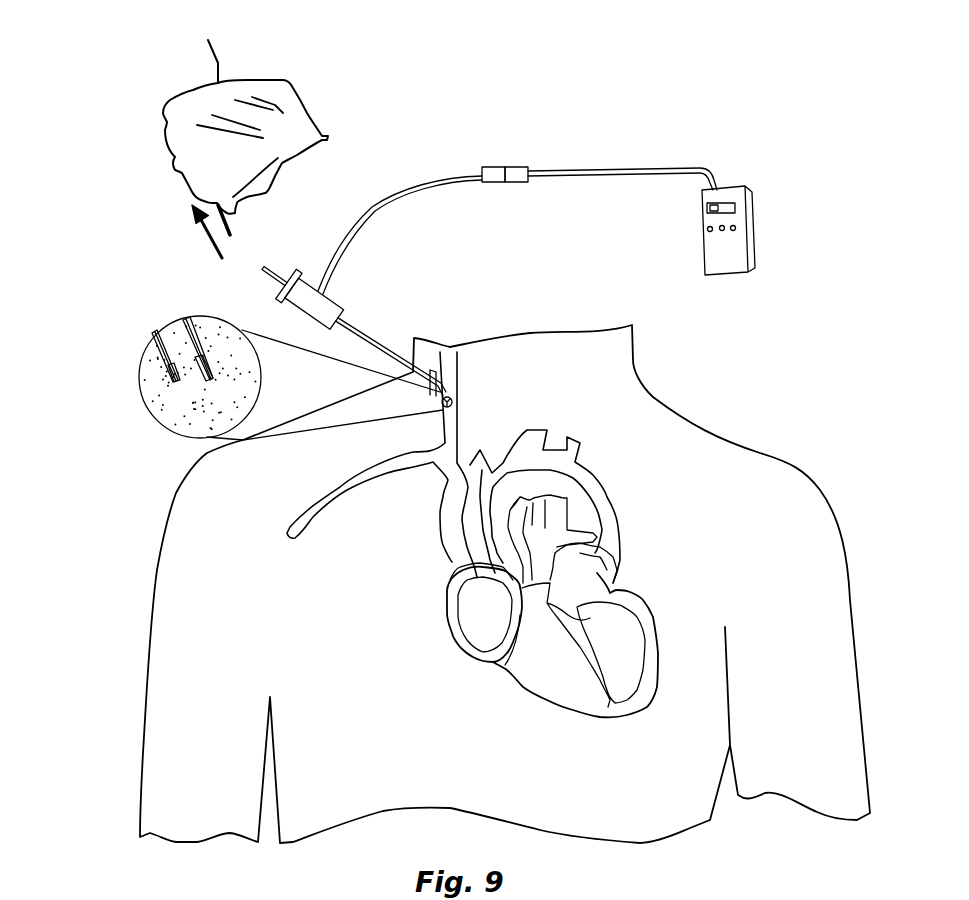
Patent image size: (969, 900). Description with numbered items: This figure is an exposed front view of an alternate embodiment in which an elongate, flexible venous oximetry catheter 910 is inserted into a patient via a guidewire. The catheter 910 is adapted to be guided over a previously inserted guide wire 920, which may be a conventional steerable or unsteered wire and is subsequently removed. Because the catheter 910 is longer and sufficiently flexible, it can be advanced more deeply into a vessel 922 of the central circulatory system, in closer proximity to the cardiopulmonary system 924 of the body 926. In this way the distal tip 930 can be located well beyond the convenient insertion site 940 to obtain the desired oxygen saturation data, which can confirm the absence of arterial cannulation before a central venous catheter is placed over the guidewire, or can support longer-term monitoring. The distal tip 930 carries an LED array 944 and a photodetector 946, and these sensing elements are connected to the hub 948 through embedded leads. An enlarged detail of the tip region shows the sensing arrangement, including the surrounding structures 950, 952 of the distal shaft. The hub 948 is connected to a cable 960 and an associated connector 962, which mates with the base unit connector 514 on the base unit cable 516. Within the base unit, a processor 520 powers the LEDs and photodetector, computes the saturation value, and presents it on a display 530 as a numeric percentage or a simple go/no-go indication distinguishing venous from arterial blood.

The guide wire 920 is at (233, 228).
The cable 960 is at (430, 180).
The connector 962 is at (495, 167).
The base unit connector 514 is at (520, 165).
The base unit cable 516 is at (622, 167).
The display 530 is at (702, 207).
The processor 520 is at (700, 238).
The hub 948 is at (345, 294).
The oximetry catheter 910 is at (388, 320).
The insertion site 940 is at (432, 354).
The sheath wall 952 is at (186, 333).
The sheath wall 950 is at (157, 343).
The photodetector 946 is at (173, 376).
The LED array 944 is at (197, 375).
The distal tip 930 is at (191, 396).
The vessel 922 is at (470, 381).
The body 926 is at (741, 437).
The cardiopulmonary system 924 is at (643, 584).